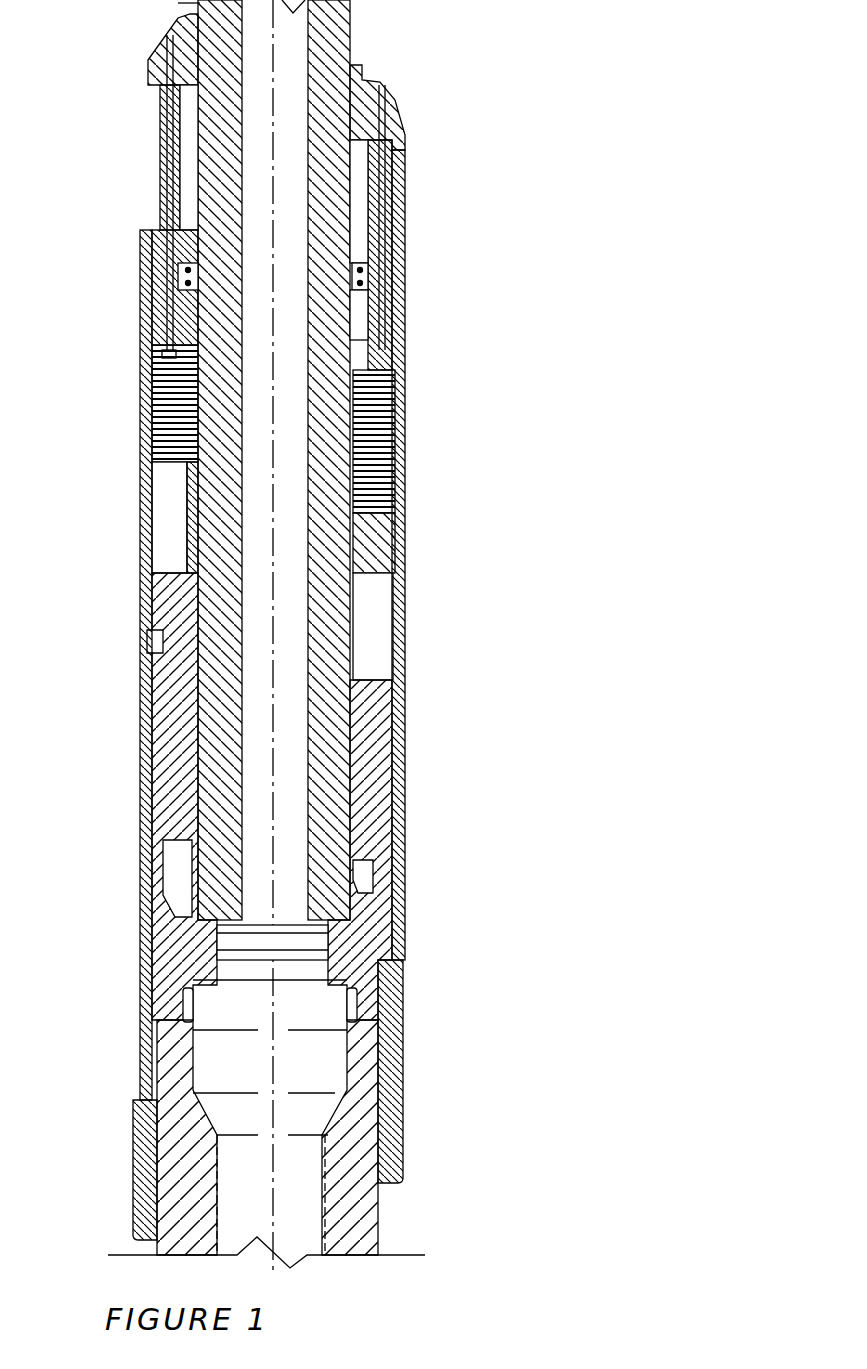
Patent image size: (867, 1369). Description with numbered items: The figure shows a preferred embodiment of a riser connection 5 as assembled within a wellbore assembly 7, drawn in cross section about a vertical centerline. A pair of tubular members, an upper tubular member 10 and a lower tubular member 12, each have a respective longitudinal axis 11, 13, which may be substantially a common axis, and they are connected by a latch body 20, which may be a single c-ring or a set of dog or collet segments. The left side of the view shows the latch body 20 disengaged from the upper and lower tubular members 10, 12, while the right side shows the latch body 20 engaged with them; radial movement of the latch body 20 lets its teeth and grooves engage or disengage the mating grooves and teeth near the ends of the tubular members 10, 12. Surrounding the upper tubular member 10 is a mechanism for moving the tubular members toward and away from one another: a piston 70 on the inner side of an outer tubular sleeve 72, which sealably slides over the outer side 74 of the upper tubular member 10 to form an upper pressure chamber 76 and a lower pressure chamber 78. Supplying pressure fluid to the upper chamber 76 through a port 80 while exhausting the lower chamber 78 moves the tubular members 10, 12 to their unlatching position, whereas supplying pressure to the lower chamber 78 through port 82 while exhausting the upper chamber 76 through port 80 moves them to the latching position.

The riser connection 5 is at (428, 1013).
The wellbore assembly 7 is at (618, 380).
The upper tubular member 10 is at (395, 948).
The longitudinal axis 11 is at (275, 461).
The lower tubular member 12 is at (328, 1153).
The longitudinal axis 13 is at (300, 1199).
The latch body 20 is at (393, 970).
The piston 70 is at (193, 597).
The outer tubular sleeve 72 is at (140, 1195).
The outer side of the upper tubular member 74 is at (395, 805).
The upper pressure chamber 76 is at (165, 505).
The lower pressure chamber 78 is at (400, 630).
The port 80 is at (160, 412).
The port 82 is at (350, 655).